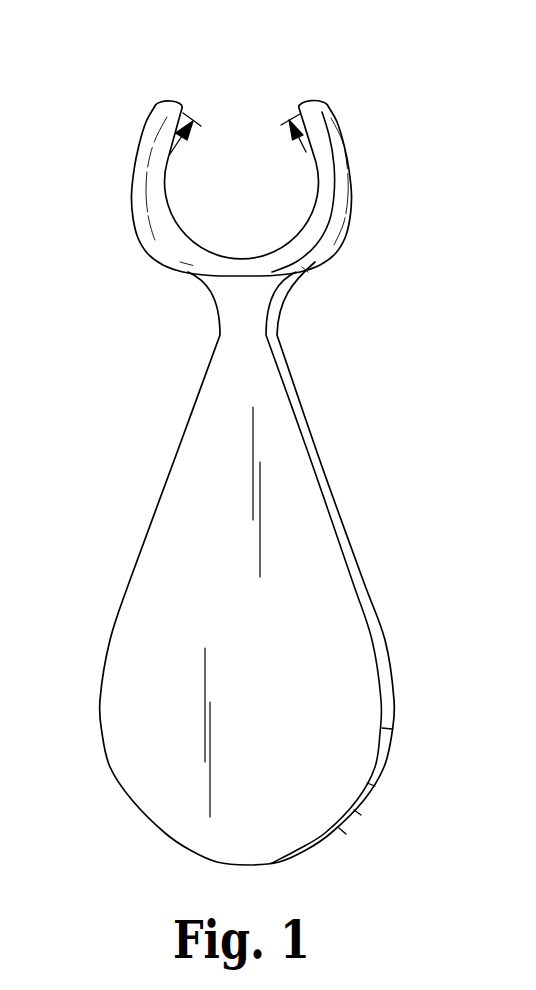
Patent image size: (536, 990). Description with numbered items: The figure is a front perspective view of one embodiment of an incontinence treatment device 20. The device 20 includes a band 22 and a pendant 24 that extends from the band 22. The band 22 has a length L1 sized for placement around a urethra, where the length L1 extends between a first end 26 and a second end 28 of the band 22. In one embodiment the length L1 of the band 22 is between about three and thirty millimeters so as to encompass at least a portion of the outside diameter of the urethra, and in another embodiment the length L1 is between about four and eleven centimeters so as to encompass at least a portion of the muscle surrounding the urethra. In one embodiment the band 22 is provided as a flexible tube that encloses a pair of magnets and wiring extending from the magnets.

The incontinence treatment device 20 is at (236, 440).
The band 22 is at (337, 152).
The pendant 24 is at (328, 511).
The first end 26 is at (177, 101).
The second end 28 is at (304, 101).
The length L1 is at (189, 237).